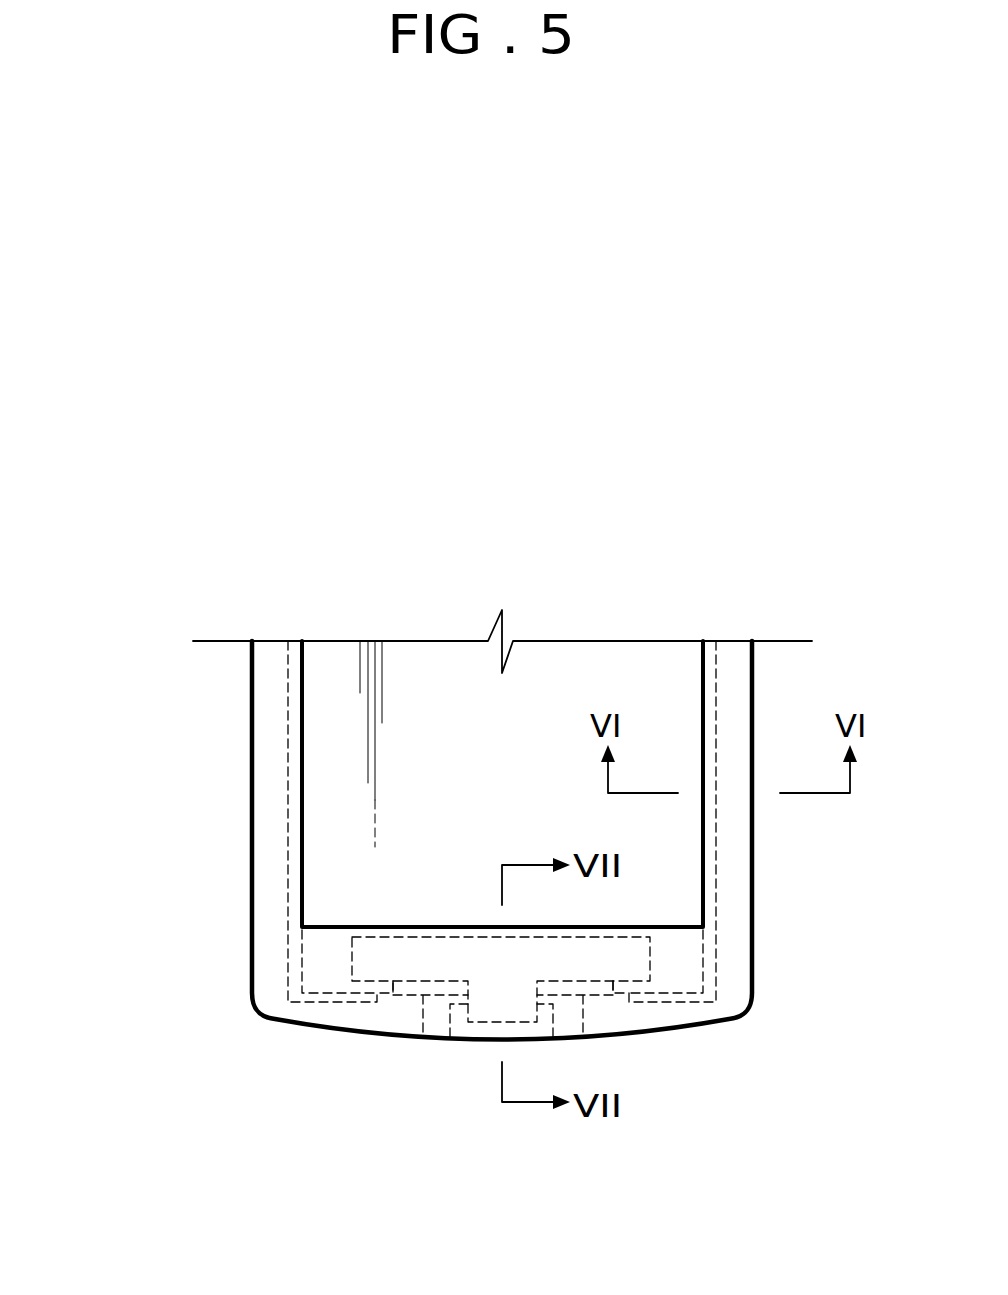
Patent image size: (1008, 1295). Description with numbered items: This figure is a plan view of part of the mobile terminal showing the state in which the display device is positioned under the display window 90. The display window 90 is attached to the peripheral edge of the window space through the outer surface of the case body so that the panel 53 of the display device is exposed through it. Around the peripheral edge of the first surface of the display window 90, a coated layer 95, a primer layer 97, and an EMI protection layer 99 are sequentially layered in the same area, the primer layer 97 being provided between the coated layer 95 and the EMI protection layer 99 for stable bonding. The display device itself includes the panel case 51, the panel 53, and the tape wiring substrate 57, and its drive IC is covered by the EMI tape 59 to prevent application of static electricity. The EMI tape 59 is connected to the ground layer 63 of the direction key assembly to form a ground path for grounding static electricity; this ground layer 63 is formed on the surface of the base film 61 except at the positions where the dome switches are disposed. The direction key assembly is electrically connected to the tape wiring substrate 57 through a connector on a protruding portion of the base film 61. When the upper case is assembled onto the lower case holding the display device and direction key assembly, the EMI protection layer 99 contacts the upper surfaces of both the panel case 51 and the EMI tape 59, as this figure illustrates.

The display window 90 is at (240, 695).
The coated layer 95 is at (397, 840).
The primer layer 97 is at (397, 840).
The EMI protection layer 99 is at (270, 888).
The panel case 51 is at (290, 812).
The panel 53 is at (448, 685).
The EMI tape 59 is at (650, 958).
The base film 61 is at (404, 1008).
The ground layer 63 is at (434, 1040).
The tape wiring substrate 57 is at (607, 995).